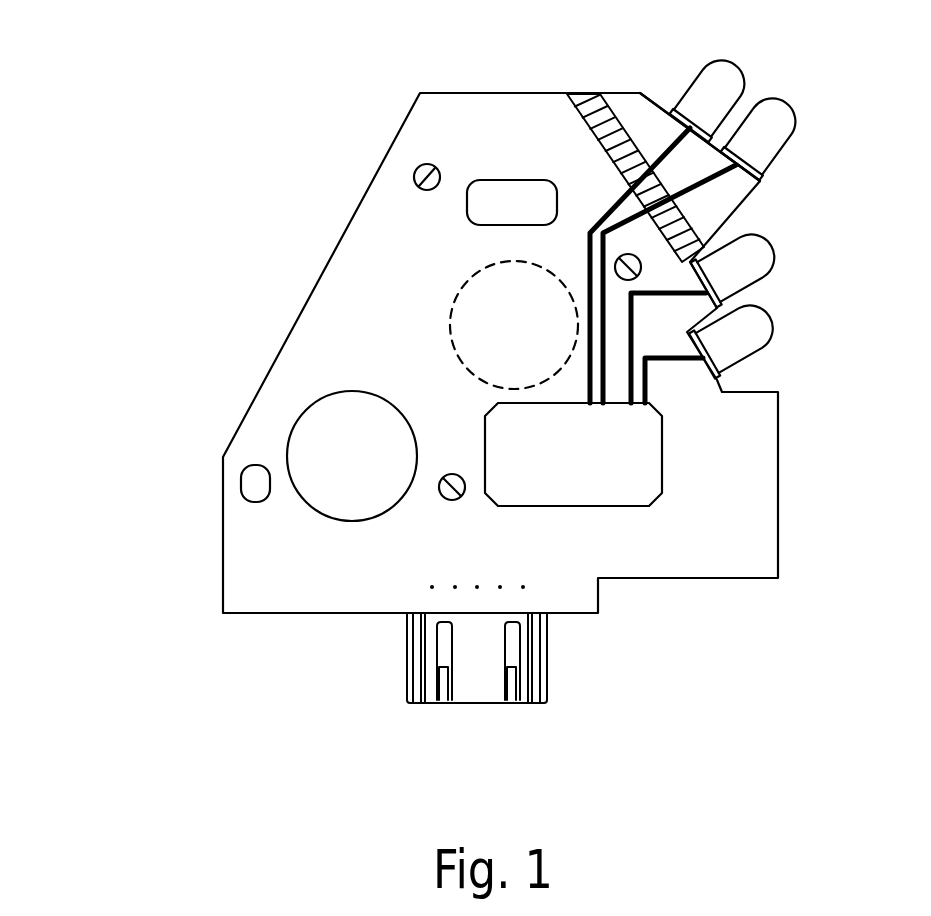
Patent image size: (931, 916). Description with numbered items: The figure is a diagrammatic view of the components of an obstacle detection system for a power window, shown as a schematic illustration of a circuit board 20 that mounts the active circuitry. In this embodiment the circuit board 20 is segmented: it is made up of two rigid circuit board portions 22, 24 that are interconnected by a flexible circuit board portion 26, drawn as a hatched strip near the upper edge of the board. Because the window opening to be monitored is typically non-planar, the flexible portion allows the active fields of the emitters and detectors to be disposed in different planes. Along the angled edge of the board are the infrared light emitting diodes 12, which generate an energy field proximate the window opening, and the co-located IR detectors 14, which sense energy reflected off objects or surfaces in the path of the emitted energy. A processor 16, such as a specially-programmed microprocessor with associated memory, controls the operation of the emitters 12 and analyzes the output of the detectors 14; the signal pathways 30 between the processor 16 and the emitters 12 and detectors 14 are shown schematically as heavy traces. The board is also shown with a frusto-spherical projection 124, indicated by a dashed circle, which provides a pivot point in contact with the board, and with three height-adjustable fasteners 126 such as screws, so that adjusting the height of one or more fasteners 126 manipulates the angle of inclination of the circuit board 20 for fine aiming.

The infrared light emitting diodes 12 is at (801, 303).
The IR detectors 14 is at (766, 63).
The processor 16 is at (580, 495).
The circuit board 20 is at (158, 548).
The first rigid circuit board portion 22 is at (417, 128).
The second rigid circuit board portion 24 is at (643, 115).
The flexible circuit board portion 26 is at (583, 100).
The signal pathways 30 is at (612, 224).
The projection 124 is at (487, 313).
The height-adjustable fasteners 126 is at (413, 176).